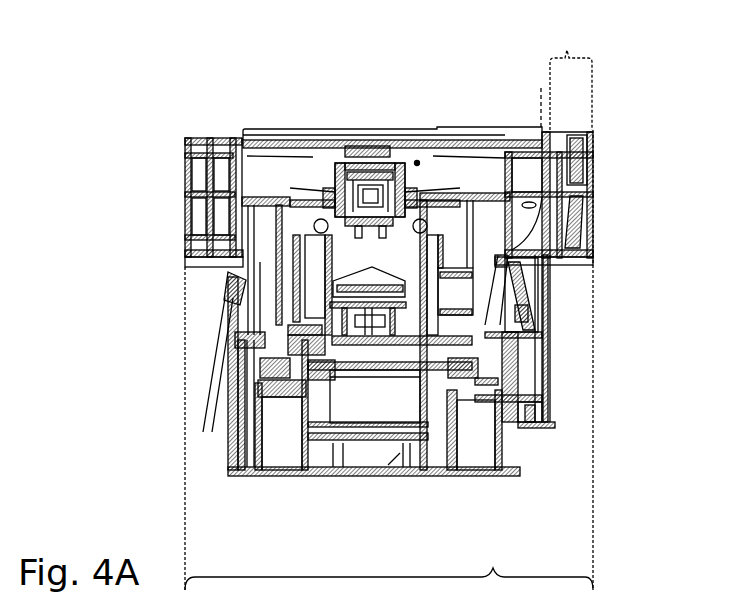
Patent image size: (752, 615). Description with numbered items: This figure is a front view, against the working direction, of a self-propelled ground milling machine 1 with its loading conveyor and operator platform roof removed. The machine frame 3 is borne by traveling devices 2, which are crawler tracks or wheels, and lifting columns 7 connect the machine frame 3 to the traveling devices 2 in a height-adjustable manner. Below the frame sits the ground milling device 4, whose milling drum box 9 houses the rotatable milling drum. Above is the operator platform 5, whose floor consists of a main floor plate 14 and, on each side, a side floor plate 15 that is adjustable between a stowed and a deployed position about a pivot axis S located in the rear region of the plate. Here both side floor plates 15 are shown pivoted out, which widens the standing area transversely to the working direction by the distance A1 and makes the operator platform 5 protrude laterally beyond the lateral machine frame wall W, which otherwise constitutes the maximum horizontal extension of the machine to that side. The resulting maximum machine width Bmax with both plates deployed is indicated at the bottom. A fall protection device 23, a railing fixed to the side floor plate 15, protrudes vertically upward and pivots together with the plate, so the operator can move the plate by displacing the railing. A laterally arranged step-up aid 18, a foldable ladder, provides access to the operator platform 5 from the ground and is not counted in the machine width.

The ground milling machine 1 is at (505, 108).
The distance A1 is at (571, 74).
The pivot axis S is at (533, 97).
The operator platform 5 is at (305, 140).
The fall protection device 23 is at (190, 140).
The side floor plate 15 is at (197, 248).
The main floor plate 14 is at (567, 213).
The lateral machine frame wall W is at (550, 313).
The machine frame 3 is at (217, 297).
The step-up aid 18 is at (218, 352).
The lifting column 7 is at (273, 358).
The traveling device 2 is at (278, 450).
The ground milling device 4 is at (370, 478).
The milling drum box 9 is at (383, 478).
The maximum machine width Bmax is at (389, 561).